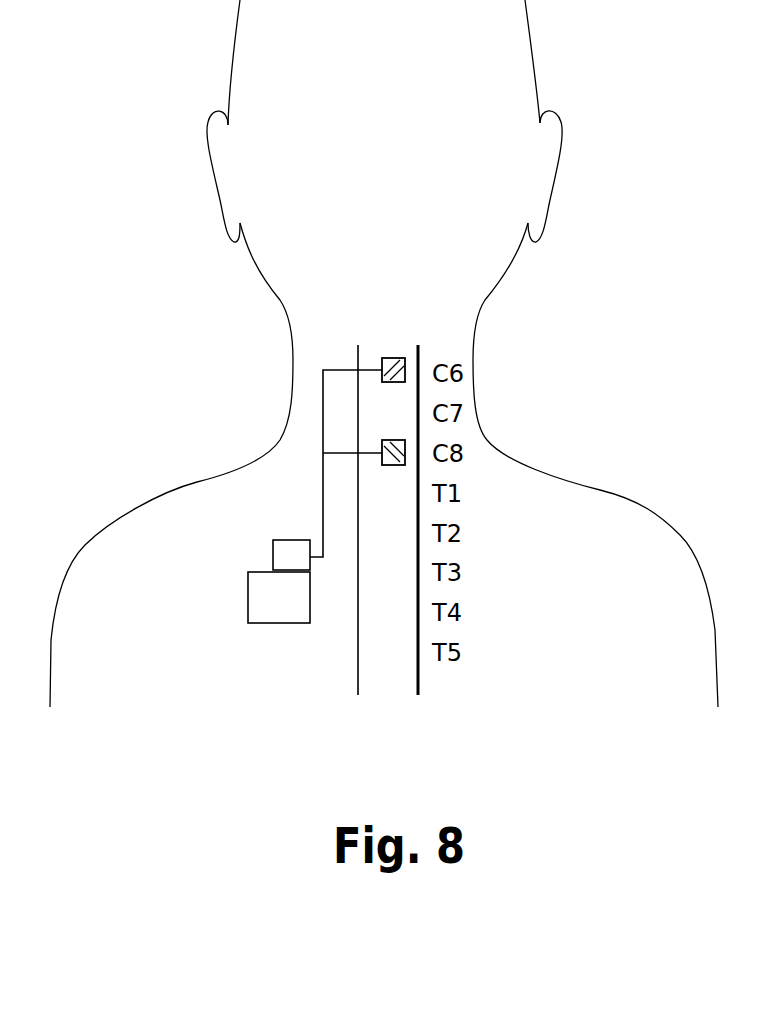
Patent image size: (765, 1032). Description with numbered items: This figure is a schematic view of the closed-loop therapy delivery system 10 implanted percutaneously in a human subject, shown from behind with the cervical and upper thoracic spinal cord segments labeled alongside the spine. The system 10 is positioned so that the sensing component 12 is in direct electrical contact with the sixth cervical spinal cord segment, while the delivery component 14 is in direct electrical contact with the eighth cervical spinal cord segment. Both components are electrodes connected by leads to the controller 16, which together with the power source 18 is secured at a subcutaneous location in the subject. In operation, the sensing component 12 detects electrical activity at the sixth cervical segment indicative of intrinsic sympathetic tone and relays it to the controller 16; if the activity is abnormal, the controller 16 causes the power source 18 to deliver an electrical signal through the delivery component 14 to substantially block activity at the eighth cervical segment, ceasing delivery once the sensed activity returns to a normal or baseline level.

The closed-loop therapy delivery system 10 is at (205, 452).
The sensing component 12 is at (397, 340).
The delivery component 14 is at (392, 470).
The controller 16 is at (268, 543).
The power source 18 is at (257, 633).